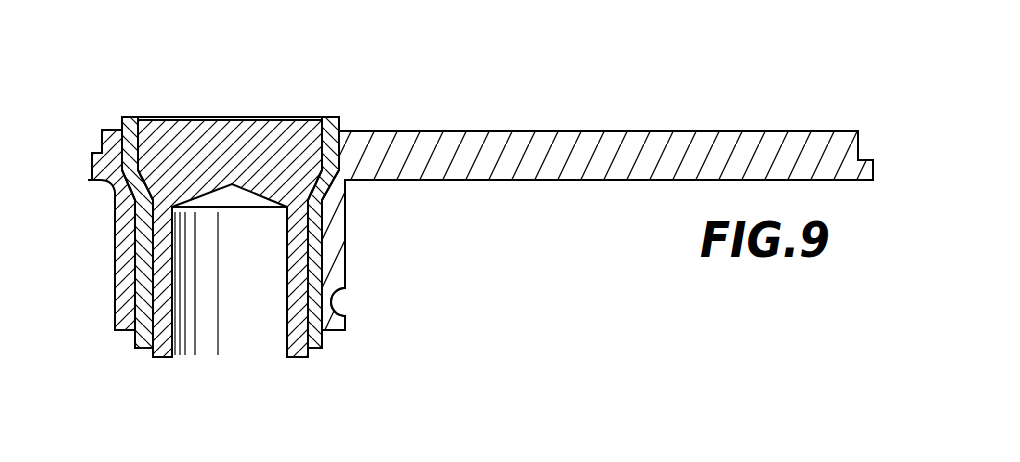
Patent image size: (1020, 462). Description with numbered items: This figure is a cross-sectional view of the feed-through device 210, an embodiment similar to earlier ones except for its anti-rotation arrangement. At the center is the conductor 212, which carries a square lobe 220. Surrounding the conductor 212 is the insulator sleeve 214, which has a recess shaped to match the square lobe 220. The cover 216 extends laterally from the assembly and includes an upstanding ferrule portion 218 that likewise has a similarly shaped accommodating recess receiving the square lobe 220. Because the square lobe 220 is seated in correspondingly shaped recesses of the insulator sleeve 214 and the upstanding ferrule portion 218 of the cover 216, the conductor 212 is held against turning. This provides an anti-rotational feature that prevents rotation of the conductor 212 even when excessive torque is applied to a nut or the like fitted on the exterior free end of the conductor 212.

The feed-through device 210 is at (472, 236).
The conductor 212 is at (216, 150).
The insulator sleeve 214 is at (136, 118).
The cover 216 is at (595, 131).
The upstanding ferrule portion 218 is at (360, 267).
The square lobe 220 is at (288, 140).